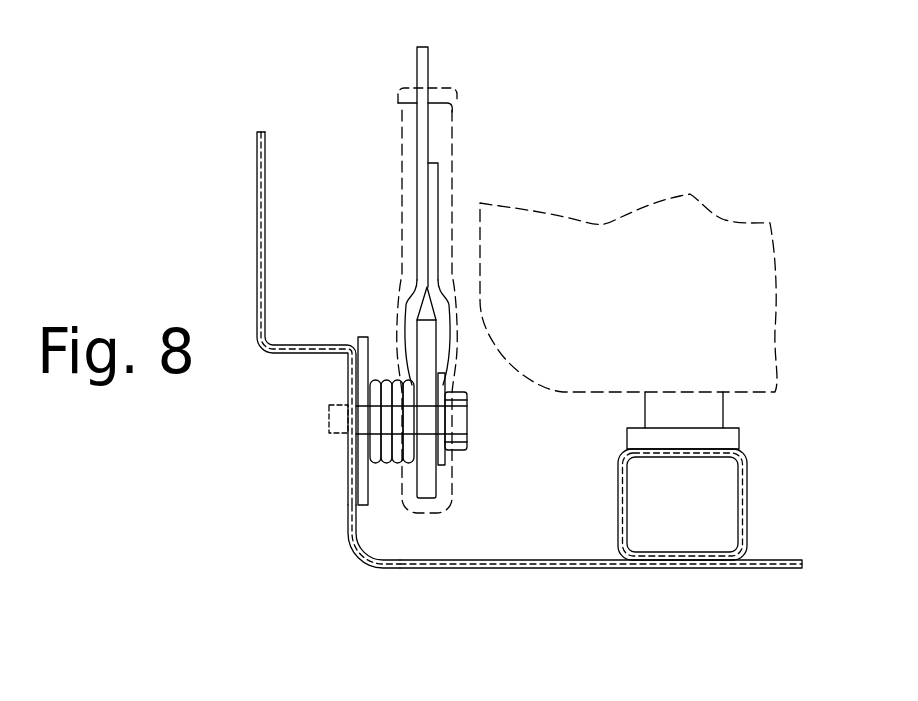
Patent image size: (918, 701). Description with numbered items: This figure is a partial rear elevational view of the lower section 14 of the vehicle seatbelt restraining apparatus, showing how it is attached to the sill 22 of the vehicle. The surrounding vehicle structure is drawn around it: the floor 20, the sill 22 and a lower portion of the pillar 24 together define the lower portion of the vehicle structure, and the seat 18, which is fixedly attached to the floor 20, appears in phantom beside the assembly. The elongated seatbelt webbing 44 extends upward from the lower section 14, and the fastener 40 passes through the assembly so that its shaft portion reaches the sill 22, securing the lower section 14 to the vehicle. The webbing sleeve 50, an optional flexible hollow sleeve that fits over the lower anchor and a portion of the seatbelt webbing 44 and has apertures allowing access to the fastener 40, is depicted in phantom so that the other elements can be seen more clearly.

The lower section 14 is at (479, 155).
The seat 18 is at (663, 248).
The floor 20 is at (527, 558).
The sill 22 is at (363, 538).
The pillar 24 is at (265, 203).
The fastener 40 is at (467, 422).
The seatbelt webbing 44 is at (428, 68).
The webbing sleeve 50 is at (402, 135).